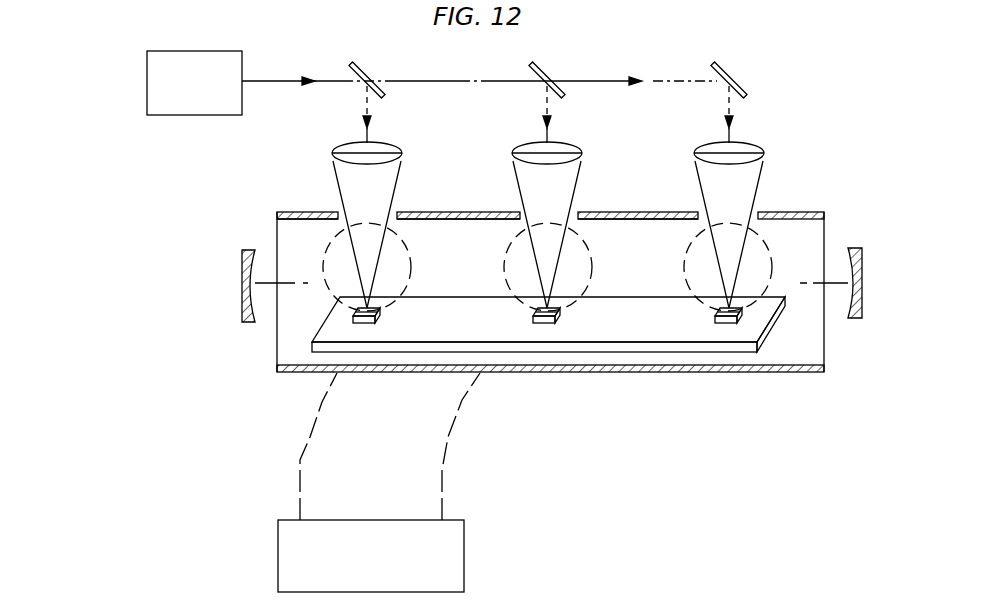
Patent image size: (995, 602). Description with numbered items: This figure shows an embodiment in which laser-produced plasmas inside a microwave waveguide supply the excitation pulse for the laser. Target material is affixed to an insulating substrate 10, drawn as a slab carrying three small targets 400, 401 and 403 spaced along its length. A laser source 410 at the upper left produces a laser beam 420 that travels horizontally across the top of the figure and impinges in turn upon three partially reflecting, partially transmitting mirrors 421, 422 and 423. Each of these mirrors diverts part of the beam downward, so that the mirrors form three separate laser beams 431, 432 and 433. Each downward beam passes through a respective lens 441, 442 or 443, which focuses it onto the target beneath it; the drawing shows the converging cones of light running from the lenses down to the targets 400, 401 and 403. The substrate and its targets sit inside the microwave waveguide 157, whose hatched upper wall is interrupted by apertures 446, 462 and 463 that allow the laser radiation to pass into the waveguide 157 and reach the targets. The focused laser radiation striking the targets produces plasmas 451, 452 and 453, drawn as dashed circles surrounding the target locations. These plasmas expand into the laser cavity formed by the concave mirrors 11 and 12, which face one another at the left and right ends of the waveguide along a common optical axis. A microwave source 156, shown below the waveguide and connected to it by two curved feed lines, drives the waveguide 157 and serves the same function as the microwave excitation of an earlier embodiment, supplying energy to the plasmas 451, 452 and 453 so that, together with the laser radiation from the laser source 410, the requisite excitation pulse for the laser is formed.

The insulating substrate 10 is at (318, 326).
The mirror 11 is at (245, 250).
The mirror 12 is at (852, 248).
The microwave source 156 is at (465, 558).
The microwave waveguide 157 is at (798, 373).
The target 400 is at (380, 319).
The target 401 is at (548, 324).
The sample 403 is at (728, 324).
The laser source 410 is at (195, 116).
The laser beam 420 is at (283, 79).
The partially reflecting, partially transmitting mirror 421 is at (370, 63).
The partially reflecting, partially transmitting mirror 422 is at (557, 63).
The partially reflecting, partially transmitting mirror 423 is at (741, 63).
The laser beam 431 is at (364, 112).
The laser beam 432 is at (544, 112).
The laser beam 433 is at (727, 112).
The lens 441 is at (333, 151).
The lens 442 is at (513, 151).
The lens 443 is at (695, 151).
The cavity wall aperture 446 is at (338, 211).
The aperture 462 is at (520, 211).
The aperture 463 is at (698, 211).
The plasma 451 is at (328, 250).
The plasma 452 is at (507, 250).
The plasma 453 is at (688, 250).